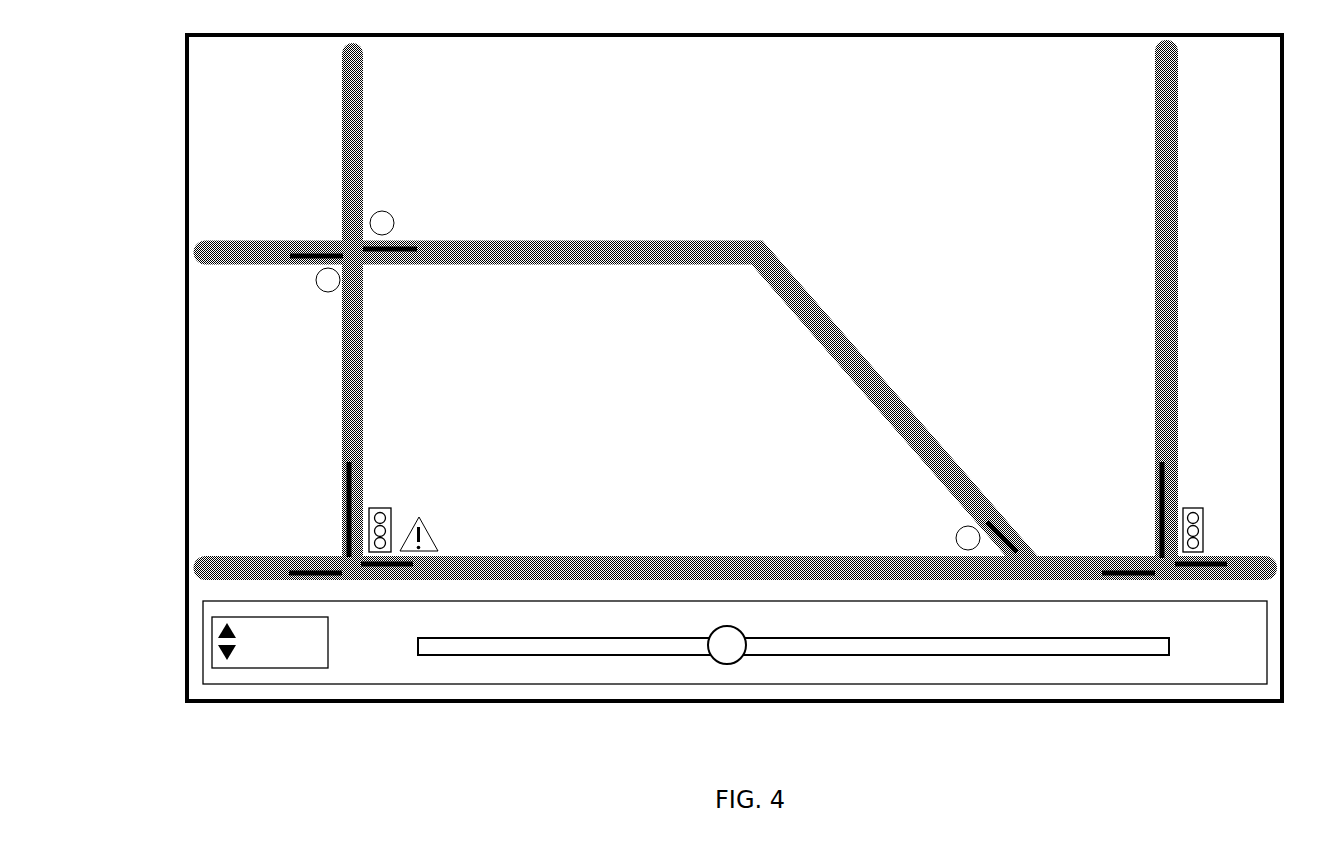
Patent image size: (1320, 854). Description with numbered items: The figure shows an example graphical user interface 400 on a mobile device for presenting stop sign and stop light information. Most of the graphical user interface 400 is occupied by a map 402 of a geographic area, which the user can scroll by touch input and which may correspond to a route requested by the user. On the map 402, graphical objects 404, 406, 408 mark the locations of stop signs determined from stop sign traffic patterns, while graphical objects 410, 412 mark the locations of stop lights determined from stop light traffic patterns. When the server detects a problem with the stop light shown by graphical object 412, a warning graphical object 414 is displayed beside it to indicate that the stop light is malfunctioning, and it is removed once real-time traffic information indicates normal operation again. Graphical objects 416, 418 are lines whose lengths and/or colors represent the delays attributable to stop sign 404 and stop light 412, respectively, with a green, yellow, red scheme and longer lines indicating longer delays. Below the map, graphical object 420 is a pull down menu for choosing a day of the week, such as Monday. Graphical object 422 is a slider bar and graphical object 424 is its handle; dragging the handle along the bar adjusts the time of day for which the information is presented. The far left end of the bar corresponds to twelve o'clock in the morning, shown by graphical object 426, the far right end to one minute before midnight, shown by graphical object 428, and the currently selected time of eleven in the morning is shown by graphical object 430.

The graphical user interface 400 is at (166, 117).
The map 402 is at (815, 140).
The graphical object 404 is at (389, 214).
The graphical object 406 is at (317, 283).
The graphical object 408 is at (953, 533).
The graphical object 410 is at (1189, 508).
The graphical object 412 is at (389, 508).
The graphical object 414 is at (432, 539).
The graphical object 416 is at (385, 252).
The graphical object 418 is at (347, 500).
The graphical object 420 is at (271, 668).
The graphical object 422 is at (902, 657).
The graphical object 424 is at (732, 665).
The graphical object 426 is at (385, 660).
The graphical object 428 is at (1215, 662).
The graphical object 430 is at (686, 620).